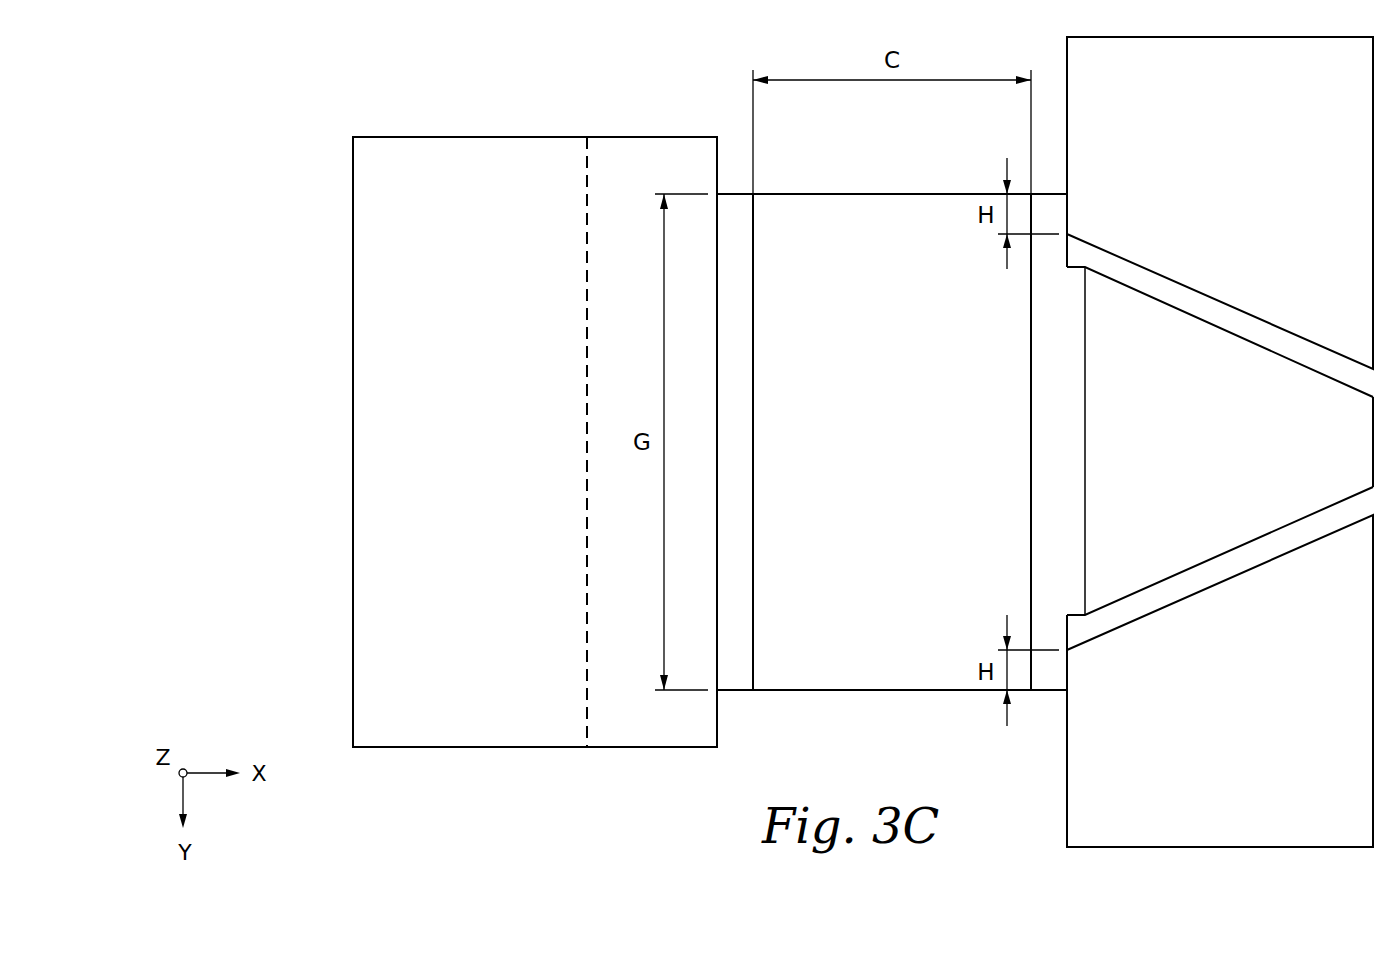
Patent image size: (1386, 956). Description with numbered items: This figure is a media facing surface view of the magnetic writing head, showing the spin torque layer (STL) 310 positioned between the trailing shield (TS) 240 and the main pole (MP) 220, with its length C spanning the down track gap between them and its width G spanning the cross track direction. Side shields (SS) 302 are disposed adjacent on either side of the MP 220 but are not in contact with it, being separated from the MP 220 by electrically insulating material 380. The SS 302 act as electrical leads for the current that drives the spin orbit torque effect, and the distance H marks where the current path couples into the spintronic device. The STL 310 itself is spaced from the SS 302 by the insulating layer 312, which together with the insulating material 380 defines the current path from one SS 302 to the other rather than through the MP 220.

The trailing shield 240 is at (450, 465).
The spin torque layer 310 is at (881, 465).
The insulating layer 312 is at (1038, 372).
The side shield 302 is at (1208, 191).
The electrically insulating material 380 is at (1214, 310).
The main pole 220 is at (1208, 465).